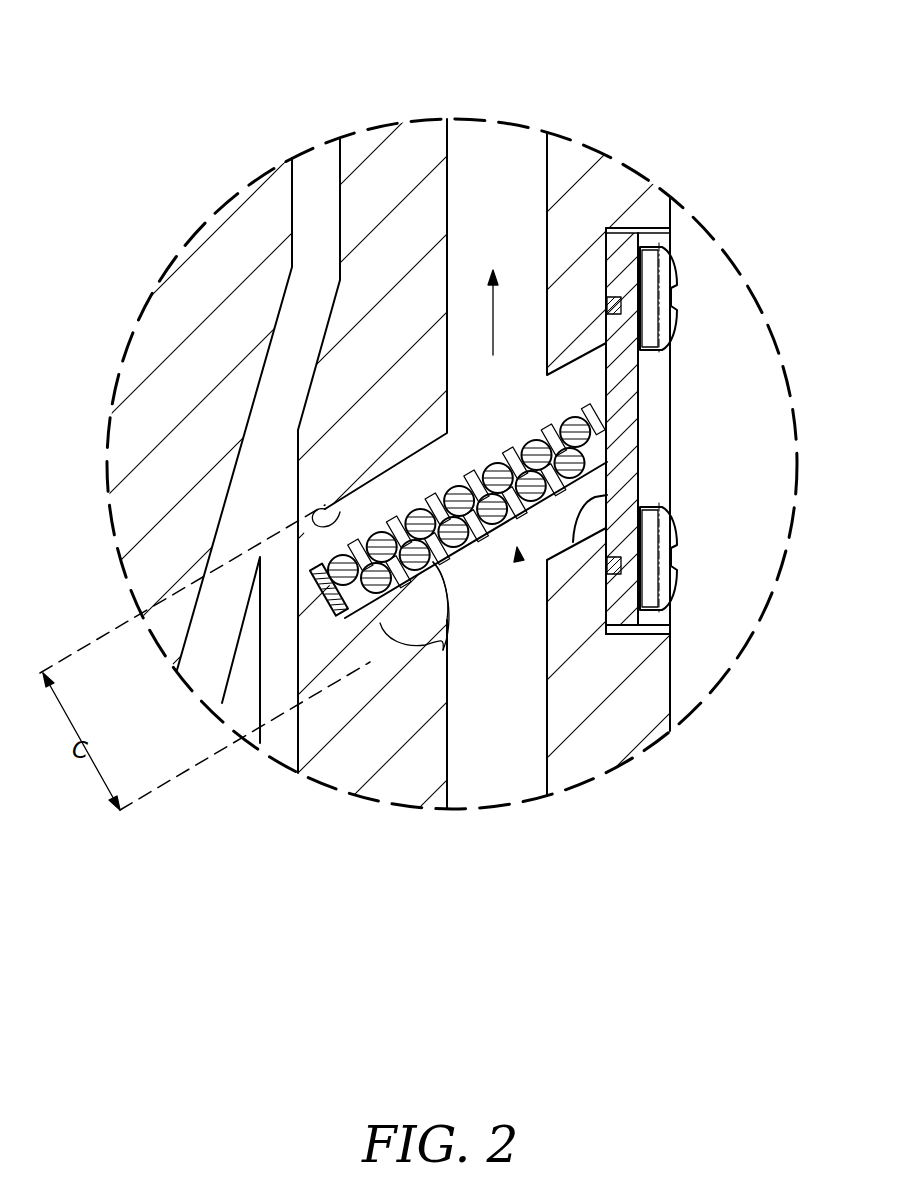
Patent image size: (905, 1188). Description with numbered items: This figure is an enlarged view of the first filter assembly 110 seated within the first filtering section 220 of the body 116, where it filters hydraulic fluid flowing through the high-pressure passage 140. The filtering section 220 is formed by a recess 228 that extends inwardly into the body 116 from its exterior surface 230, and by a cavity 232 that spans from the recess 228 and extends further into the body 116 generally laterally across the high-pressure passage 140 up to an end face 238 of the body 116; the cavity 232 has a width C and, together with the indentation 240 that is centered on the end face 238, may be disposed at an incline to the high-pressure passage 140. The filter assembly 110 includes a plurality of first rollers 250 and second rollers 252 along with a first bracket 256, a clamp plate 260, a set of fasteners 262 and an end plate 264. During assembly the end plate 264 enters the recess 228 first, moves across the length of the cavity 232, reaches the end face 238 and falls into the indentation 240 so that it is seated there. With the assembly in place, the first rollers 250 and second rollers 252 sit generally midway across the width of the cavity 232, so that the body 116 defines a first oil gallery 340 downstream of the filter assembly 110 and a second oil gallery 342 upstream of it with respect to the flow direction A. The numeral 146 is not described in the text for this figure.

The first filter assembly 110 is at (655, 405).
The body 116 is at (670, 215).
The high-pressure passage 140 is at (450, 675).
The passage 146 is at (292, 205).
The first filtering section 220 is at (715, 80).
The recess 228 is at (670, 233).
The exterior surface 230 is at (670, 660).
The cavity 232 is at (607, 495).
The end face 238 is at (338, 512).
The indentation 240 is at (343, 620).
The first rollers 250 is at (305, 441).
The second rollers 252 is at (445, 565).
The first bracket 256 is at (481, 467).
The clamp plate 260 is at (637, 373).
The fasteners 262 is at (672, 278).
The end plate 264 is at (223, 693).
The first oil gallery 340 is at (523, 413).
The second oil gallery 342 is at (520, 565).